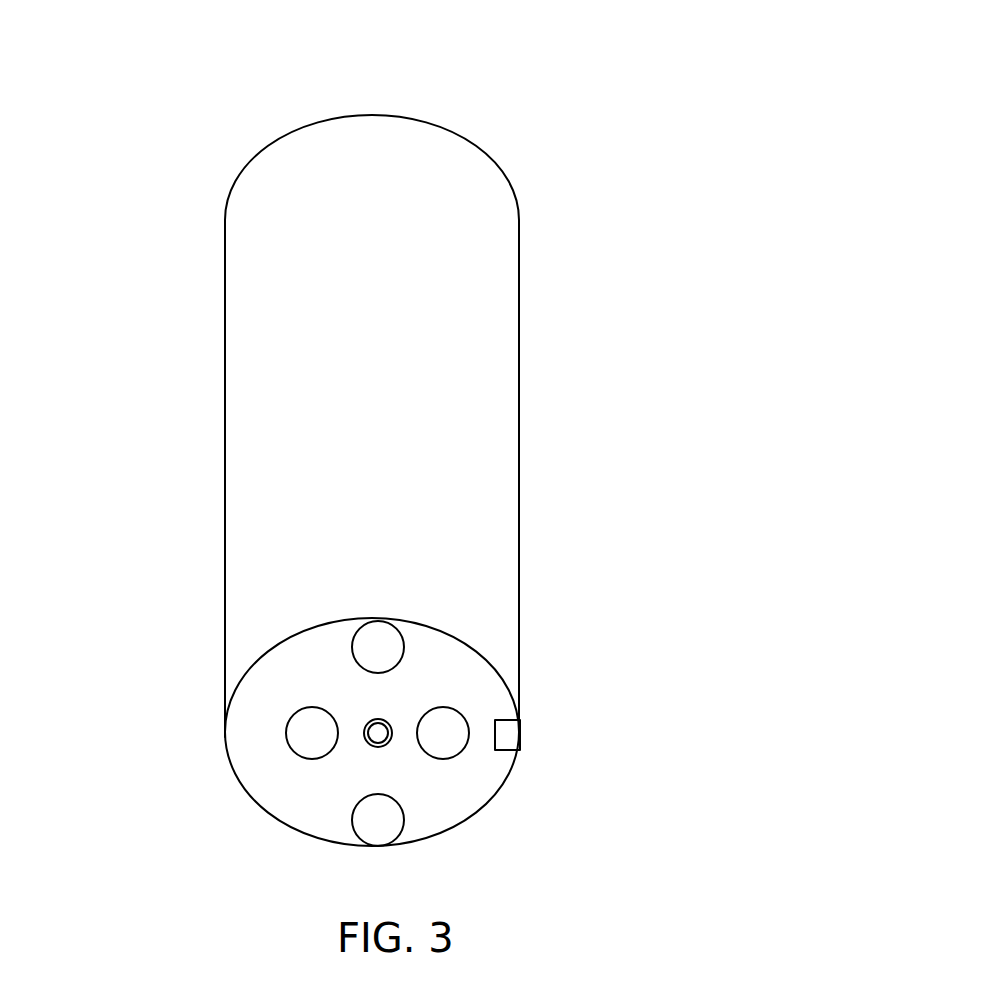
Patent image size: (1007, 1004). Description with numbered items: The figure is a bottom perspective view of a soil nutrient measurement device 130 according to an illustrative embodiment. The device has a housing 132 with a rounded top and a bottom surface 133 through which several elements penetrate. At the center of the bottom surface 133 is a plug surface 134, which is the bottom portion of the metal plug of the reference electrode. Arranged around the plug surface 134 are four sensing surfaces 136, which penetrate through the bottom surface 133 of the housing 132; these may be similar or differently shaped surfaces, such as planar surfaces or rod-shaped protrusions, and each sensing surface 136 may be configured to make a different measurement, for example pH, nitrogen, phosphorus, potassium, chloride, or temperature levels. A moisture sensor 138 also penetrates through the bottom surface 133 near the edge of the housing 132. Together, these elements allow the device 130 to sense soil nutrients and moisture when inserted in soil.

The soil nutrient measurement device 130 is at (372, 463).
The housing 132 is at (473, 385).
The bottom surface 133 is at (433, 803).
The plug surface 134 is at (390, 725).
The sensing surfaces 136 is at (373, 648).
The moisture sensor 138 is at (507, 738).